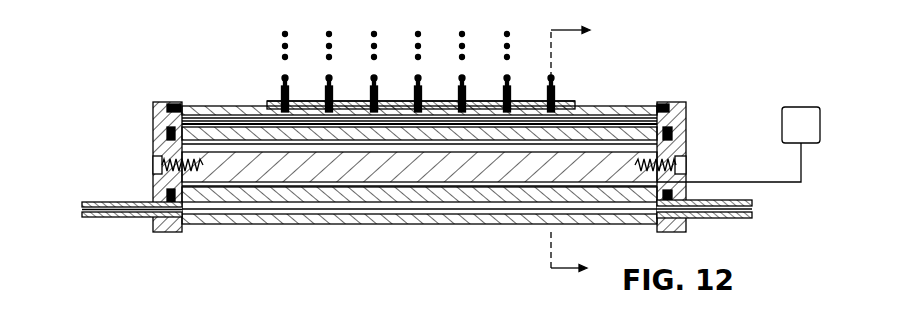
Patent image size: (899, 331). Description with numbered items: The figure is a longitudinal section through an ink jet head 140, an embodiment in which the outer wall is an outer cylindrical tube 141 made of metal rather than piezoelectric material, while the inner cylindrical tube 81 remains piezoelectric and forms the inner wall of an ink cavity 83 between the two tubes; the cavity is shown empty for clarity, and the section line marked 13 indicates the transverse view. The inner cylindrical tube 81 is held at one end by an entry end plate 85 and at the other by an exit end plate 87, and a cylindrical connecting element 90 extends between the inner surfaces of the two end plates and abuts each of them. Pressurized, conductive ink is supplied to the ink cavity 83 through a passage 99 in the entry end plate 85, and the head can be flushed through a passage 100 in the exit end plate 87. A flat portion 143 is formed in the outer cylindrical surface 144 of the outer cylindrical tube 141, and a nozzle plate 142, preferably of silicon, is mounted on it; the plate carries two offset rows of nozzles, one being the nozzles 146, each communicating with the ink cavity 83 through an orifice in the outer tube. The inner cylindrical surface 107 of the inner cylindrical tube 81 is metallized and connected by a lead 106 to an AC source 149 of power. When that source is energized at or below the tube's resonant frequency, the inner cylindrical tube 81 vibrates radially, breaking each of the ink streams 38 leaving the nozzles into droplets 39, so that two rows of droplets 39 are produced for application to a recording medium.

The ink jet head 140 is at (434, 140).
The exit end plate 87 is at (153, 135).
The entry end plate 85 is at (688, 108).
The inner cylindrical tube 81 is at (223, 120).
The cylindrical connecting element 90 is at (401, 183).
The inner cylindrical surface 107 is at (428, 188).
The ink cavity 83 is at (320, 213).
The outer cylindrical tube 141 is at (573, 102).
The outer cylindrical surface 144 is at (610, 104).
The nozzles 146 is at (320, 100).
The flat portion 143 is at (362, 100).
The ink streams 38 is at (414, 92).
The nozzle plate 142 is at (470, 100).
The droplets 39 is at (417, 45).
The passage 100 is at (84, 210).
The passage 99 is at (753, 208).
The AC source of power 149 is at (821, 125).
The lead 106 is at (813, 181).
The section line 13- 13 is at (570, 149).